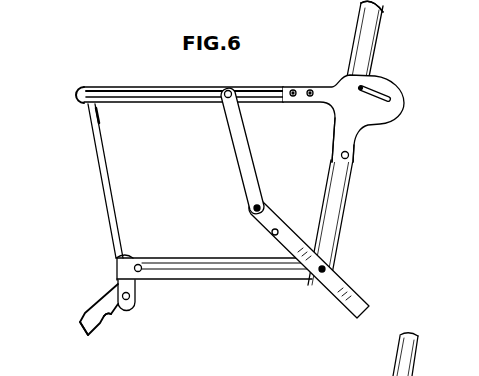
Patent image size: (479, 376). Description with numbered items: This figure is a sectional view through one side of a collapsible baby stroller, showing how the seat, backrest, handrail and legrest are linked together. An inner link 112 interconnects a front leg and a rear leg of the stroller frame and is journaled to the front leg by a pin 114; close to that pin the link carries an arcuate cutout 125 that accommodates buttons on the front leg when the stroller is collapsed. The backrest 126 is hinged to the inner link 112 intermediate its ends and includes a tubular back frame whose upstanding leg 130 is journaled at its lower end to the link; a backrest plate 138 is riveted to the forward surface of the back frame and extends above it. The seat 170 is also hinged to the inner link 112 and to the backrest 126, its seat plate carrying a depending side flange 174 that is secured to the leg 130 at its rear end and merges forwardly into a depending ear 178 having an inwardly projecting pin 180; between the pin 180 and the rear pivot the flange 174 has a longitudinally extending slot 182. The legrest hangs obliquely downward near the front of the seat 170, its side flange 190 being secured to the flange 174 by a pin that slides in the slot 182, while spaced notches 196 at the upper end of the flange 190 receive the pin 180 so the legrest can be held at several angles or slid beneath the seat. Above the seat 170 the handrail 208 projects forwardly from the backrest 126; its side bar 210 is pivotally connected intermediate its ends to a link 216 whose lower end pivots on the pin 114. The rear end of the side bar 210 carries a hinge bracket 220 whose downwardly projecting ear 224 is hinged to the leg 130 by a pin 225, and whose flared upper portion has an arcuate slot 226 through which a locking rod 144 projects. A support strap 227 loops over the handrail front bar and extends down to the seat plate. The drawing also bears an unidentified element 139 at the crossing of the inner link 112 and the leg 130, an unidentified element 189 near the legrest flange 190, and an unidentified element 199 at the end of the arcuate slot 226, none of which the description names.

The handrail 208 is at (139, 84).
The side bar 210 is at (163, 105).
The support strap 227 is at (101, 188).
The backrest plate 138 is at (357, 32).
The backrest 126 is at (388, 44).
The slot end 199 is at (364, 87).
The arcuate slot 226 is at (402, 103).
The hinge bracket 220 is at (362, 146).
The pin 225 is at (350, 160).
The ear 224 is at (333, 147).
The link 216 is at (249, 134).
The pin 114 is at (252, 207).
The arcuate cutout 125 is at (271, 234).
The slot 182 is at (184, 267).
The locking rod 144 is at (139, 264).
The seat 170 is at (215, 283).
The side flange 174 is at (278, 282).
The pin 180 is at (122, 295).
The latch tab 189 is at (80, 314).
The ear 178 is at (130, 305).
The side flange 190 is at (85, 332).
The notch 196 is at (106, 318).
The leg 130 is at (347, 212).
The pivot 139 is at (331, 268).
The inner link 112 is at (363, 296).